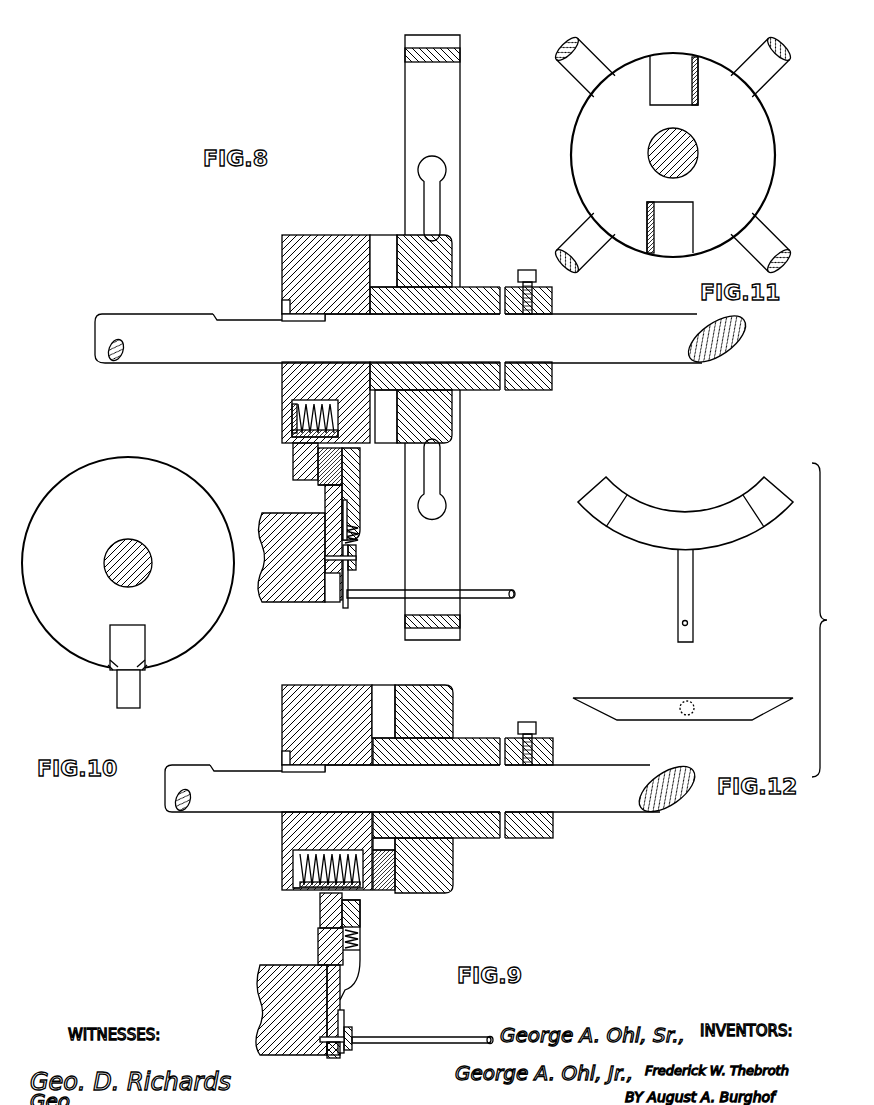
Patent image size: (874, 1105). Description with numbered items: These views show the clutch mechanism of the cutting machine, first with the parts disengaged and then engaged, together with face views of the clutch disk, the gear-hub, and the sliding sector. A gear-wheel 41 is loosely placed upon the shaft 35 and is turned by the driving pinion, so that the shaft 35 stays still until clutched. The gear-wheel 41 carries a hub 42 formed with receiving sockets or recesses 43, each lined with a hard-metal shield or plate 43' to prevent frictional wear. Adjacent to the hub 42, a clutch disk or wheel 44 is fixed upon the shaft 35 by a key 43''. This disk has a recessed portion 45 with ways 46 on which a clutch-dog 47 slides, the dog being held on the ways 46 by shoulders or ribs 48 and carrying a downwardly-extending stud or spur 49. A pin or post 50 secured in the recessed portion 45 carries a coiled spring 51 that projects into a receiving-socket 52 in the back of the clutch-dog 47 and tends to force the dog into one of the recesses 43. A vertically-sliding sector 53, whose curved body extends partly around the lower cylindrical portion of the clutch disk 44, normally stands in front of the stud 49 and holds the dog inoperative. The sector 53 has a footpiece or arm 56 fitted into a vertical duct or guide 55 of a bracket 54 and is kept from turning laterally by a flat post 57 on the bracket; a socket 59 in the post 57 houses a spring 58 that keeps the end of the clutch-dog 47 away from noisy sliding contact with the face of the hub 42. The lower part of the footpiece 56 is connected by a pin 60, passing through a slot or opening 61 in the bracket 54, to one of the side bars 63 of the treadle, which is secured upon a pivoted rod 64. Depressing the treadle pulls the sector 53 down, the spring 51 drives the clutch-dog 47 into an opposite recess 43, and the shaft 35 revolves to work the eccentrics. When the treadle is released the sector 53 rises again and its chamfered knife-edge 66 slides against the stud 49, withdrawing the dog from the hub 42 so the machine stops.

In FIG. 8, the shaft 35 is at (424, 339).
In FIG. 9, the shaft 35 is at (433, 789).
In FIG. 10, the shaft 35 is at (118, 580).
In FIG. 11, the shaft 35 is at (660, 150).
In FIG. 8, the gear-wheel 41 is at (455, 122).
In FIG. 11, the gear-wheel 41 is at (594, 58).
In FIG. 8, the hub 42 is at (458, 252).
In FIG. 9, the hub 42 is at (460, 718).
In FIG. 11, the hub 42 is at (673, 155).
In FIG. 8, the receiving sockets or recesses 43 is at (385, 335).
In FIG. 9, the receiving sockets or recesses 43 is at (410, 791).
In FIG. 11, the receiving sockets or recesses 43 is at (675, 149).
In FIG. 11, the shield or plate 43' is at (674, 153).
In FIG. 8, the key 43'' is at (282, 305).
In FIG. 9, the key 43'' is at (281, 757).
In FIG. 8, the clutch disk or wheel 44 is at (282, 250).
In FIG. 9, the clutch disk or wheel 44 is at (282, 709).
In FIG. 10, the clutch disk or wheel 44 is at (128, 563).
In FIG. 8, the recessed portion 45 is at (292, 400).
In FIG. 9, the recessed portion 45 is at (293, 858).
In FIG. 10, the recessed portion 45 is at (142, 626).
In FIG. 9, the ways 46 is at (298, 890).
In FIG. 10, the ways 46 is at (112, 672).
In FIG. 8, the clutch-dog 47 is at (348, 455).
In FIG. 10, the clutch-dog 47 is at (124, 648).
In FIG. 10, the shoulders or ribs 48 is at (132, 655).
In FIG. 8, the stud or spur 49 is at (294, 462).
In FIG. 9, the stud or spur 49 is at (320, 930).
In FIG. 10, the stud or spur 49 is at (134, 700).
In FIG. 8, the pin or post 50 is at (298, 418).
In FIG. 9, the pin or post 50 is at (318, 892).
In FIG. 8, the coiled spring 51 is at (292, 430).
In FIG. 9, the coiled spring 51 is at (300, 872).
In FIG. 8, the receiving-socket 52 is at (292, 440).
In FIG. 9, the receiving-socket 52 is at (386, 893).
In FIG. 8, the sliding sector 53 is at (322, 473).
In FIG. 9, the sliding sector 53 is at (325, 948).
In FIG. 12, the sliding sector 53 is at (665, 540).
In FIG. 8, the bracket 54 is at (280, 600).
In FIG. 9, the bracket 54 is at (272, 970).
In FIG. 8, the vertical duct or guide 55 is at (333, 600).
In FIG. 8, the footpiece or arm 56 is at (328, 507).
In FIG. 9, the footpiece or arm 56 is at (333, 1010).
In FIG. 12, the footpiece or arm 56 is at (690, 594).
In FIG. 8, the projection or flat post 57 is at (362, 518).
In FIG. 9, the projection or flat post 57 is at (370, 926).
In FIG. 8, the spring 58 is at (358, 488).
In FIG. 9, the spring 58 is at (362, 937).
In FIG. 8, the socket 59 is at (350, 504).
In FIG. 9, the socket 59 is at (362, 951).
In FIG. 8, the pin 60 is at (356, 561).
In FIG. 9, the pin 60 is at (333, 1052).
In FIG. 8, the slot or opening 61 is at (350, 576).
In FIG. 9, the slot or opening 61 is at (346, 1020).
In FIG. 8, the side bars 63 is at (352, 548).
In FIG. 9, the side bars 63 is at (352, 1050).
In FIG. 8, the rod 64 is at (380, 598).
In FIG. 9, the rod 64 is at (422, 1040).
In FIG. 12, the chamfered portion or knife-edge 66 is at (593, 490).